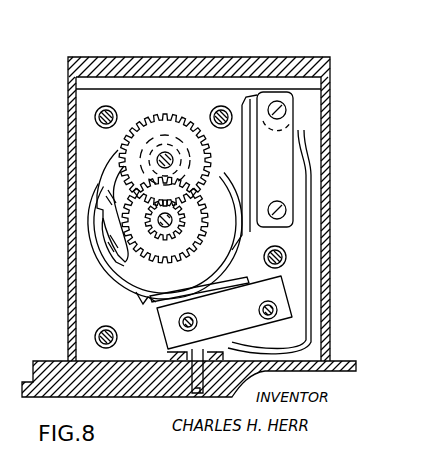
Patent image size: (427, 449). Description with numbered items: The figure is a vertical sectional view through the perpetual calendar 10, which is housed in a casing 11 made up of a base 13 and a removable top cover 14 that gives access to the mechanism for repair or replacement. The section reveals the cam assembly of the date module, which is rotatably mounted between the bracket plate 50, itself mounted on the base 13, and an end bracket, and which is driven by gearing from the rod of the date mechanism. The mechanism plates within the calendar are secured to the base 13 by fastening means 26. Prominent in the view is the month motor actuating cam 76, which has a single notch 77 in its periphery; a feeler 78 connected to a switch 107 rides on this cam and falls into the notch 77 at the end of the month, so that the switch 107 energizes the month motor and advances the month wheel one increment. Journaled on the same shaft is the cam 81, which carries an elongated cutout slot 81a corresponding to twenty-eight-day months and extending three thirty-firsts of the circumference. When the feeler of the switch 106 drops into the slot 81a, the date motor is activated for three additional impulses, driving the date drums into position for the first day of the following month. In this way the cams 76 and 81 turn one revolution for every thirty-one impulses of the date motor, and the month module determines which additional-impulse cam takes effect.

The perpetual calendar 10 is at (334, 106).
The casing 11 is at (68, 150).
The base 13 is at (33, 362).
The top cover 14 is at (246, 57).
The fastening means 26 is at (192, 394).
The bracket plate 50 is at (196, 111).
The month motor actuating cam 76 is at (200, 272).
The notch 77 is at (113, 167).
The feeler 78 is at (152, 304).
The cam 81 is at (115, 259).
The elongated cutout slot 81a is at (100, 252).
The switch 106 is at (285, 163).
The switch 107 is at (232, 322).